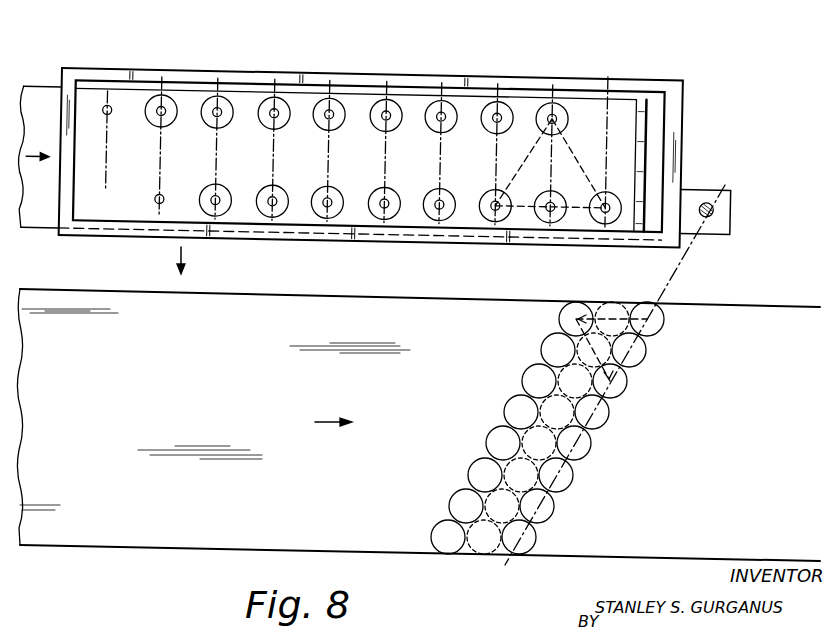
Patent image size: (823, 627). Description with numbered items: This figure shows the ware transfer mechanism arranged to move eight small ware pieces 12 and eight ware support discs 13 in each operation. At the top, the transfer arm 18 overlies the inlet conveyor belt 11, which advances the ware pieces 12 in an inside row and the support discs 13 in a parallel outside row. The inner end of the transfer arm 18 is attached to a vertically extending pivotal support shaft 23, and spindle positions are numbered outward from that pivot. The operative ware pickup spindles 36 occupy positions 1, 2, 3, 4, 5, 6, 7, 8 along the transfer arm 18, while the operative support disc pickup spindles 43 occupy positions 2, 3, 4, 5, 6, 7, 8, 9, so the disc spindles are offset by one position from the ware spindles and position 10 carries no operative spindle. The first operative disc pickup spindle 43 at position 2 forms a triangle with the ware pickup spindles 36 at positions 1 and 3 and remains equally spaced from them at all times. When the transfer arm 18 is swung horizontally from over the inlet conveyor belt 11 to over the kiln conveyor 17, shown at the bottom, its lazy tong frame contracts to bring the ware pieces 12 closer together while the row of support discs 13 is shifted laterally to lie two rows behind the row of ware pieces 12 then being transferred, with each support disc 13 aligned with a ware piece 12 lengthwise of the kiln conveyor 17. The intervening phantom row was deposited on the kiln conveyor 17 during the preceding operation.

The position 1 is at (608, 141).
The position 2 is at (551, 140).
The position 3 is at (496, 139).
The position 4 is at (440, 138).
The position 5 is at (385, 136).
The position 6 is at (328, 135).
The position 7 is at (273, 134).
The position 8 is at (216, 133).
The position 9 is at (160, 130).
The position 10 is at (109, 118).
The inlet conveyor belt 11 is at (47, 215).
The ware pieces 12 is at (556, 113).
The ware support discs 13 is at (164, 113).
The kiln conveyor 17 is at (170, 535).
The transfer arm 18 is at (660, 64).
The pivotal support shaft 23 is at (716, 197).
The ware pickup spindles 36 is at (157, 198).
The support disc pickup spindles 43 is at (110, 113).